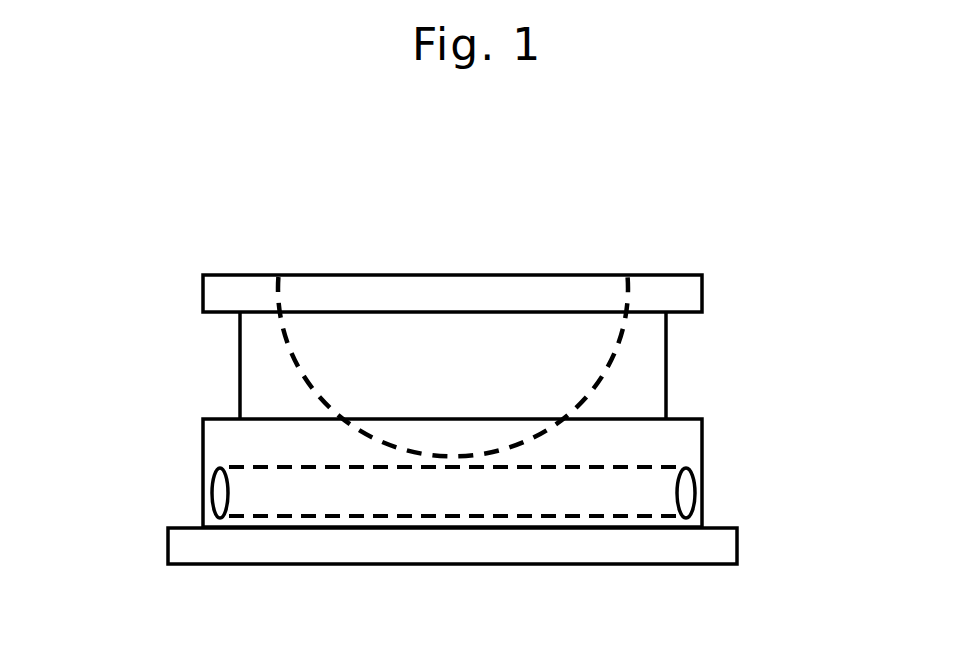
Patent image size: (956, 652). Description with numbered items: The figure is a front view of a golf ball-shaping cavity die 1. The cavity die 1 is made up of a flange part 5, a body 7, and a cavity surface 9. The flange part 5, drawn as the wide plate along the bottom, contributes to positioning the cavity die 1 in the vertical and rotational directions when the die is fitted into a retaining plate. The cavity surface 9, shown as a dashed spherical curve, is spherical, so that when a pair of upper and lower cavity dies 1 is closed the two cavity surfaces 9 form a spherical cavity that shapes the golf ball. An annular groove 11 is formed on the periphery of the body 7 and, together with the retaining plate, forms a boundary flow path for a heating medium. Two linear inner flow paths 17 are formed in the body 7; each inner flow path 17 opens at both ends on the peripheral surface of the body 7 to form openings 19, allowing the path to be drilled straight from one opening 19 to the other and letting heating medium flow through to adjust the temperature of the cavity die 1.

The cavity die 1 is at (561, 268).
The flange part 5 is at (722, 546).
The body 7 is at (635, 363).
The cavity surface 9 is at (313, 357).
The annular groove 11 is at (668, 345).
The inner flow path 17 is at (305, 500).
The opening 19 is at (217, 493).